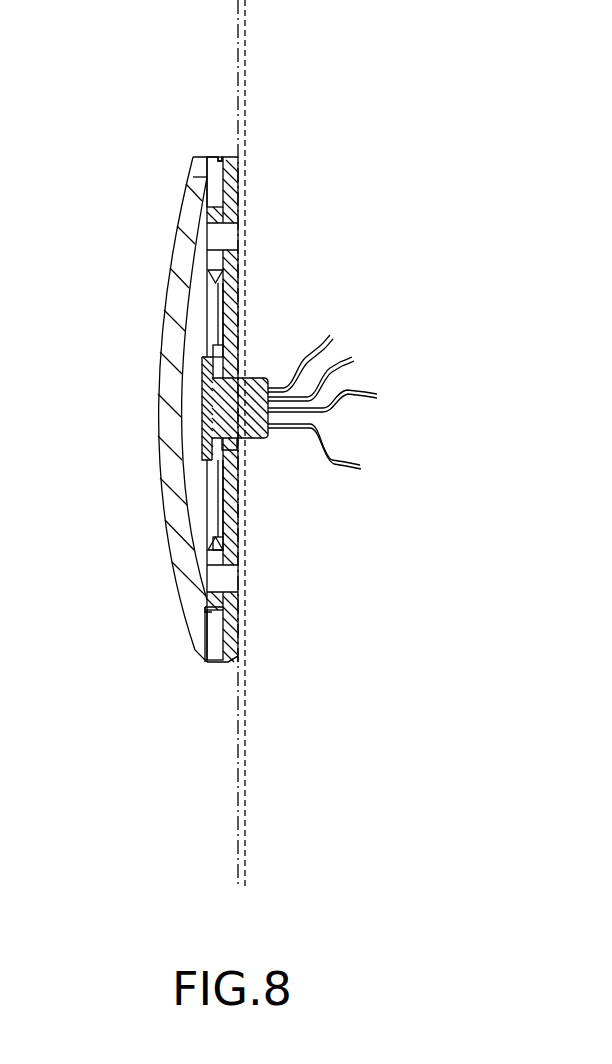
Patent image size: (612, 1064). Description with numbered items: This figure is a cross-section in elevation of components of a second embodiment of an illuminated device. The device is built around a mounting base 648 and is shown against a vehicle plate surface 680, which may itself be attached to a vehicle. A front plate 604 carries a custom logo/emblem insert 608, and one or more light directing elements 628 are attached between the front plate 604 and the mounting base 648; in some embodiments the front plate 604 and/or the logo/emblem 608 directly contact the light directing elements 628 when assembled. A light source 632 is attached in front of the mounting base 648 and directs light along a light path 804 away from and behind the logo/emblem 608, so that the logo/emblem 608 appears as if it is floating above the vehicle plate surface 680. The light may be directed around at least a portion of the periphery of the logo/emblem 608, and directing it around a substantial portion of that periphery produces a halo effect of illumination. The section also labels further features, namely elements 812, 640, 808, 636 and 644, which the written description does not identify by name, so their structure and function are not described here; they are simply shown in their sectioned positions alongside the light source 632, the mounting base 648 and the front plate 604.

The vehicle plate surface 680 is at (270, 77).
The light path 804 is at (224, 142).
The adhesive layer 812 is at (196, 277).
The front plate 604 is at (130, 409).
The custom logo/emblem insert 608 is at (157, 409).
The sensor 640 is at (202, 407).
The inner surface 808 is at (183, 478).
The light source 632 is at (268, 348).
The connector base 636 is at (253, 439).
The wires 644 is at (342, 398).
The mounting base 648 is at (238, 613).
The light directing elements 628 is at (212, 662).